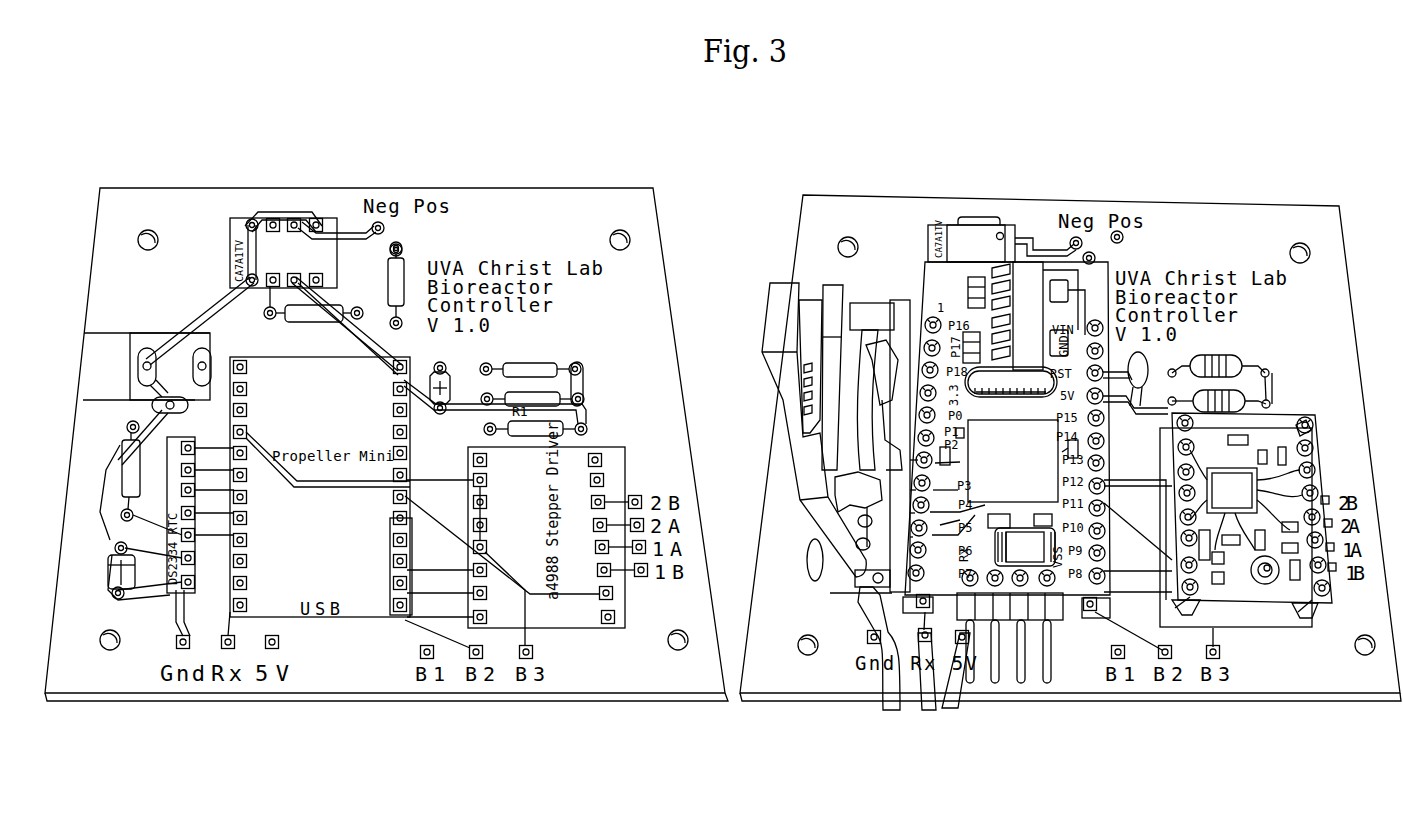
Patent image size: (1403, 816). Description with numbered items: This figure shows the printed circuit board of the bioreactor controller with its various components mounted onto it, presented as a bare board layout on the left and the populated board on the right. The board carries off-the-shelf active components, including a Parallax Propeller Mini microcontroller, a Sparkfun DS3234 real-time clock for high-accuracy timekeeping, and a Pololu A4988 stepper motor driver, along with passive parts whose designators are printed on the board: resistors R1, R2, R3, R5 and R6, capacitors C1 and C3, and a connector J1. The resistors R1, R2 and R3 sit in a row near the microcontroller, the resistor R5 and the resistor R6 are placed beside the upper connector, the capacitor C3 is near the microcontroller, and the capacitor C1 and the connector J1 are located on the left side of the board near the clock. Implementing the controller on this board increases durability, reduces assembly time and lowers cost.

The resistor R1 is at (120, 480).
The resistor R2 is at (876, 387).
The resistor R3 is at (874, 357).
The resistor R5 is at (313, 304).
The resistor R6 is at (386, 285).
The capacitor C1 is at (139, 571).
The capacitor C3 is at (786, 388).
The connector J1 is at (158, 399).